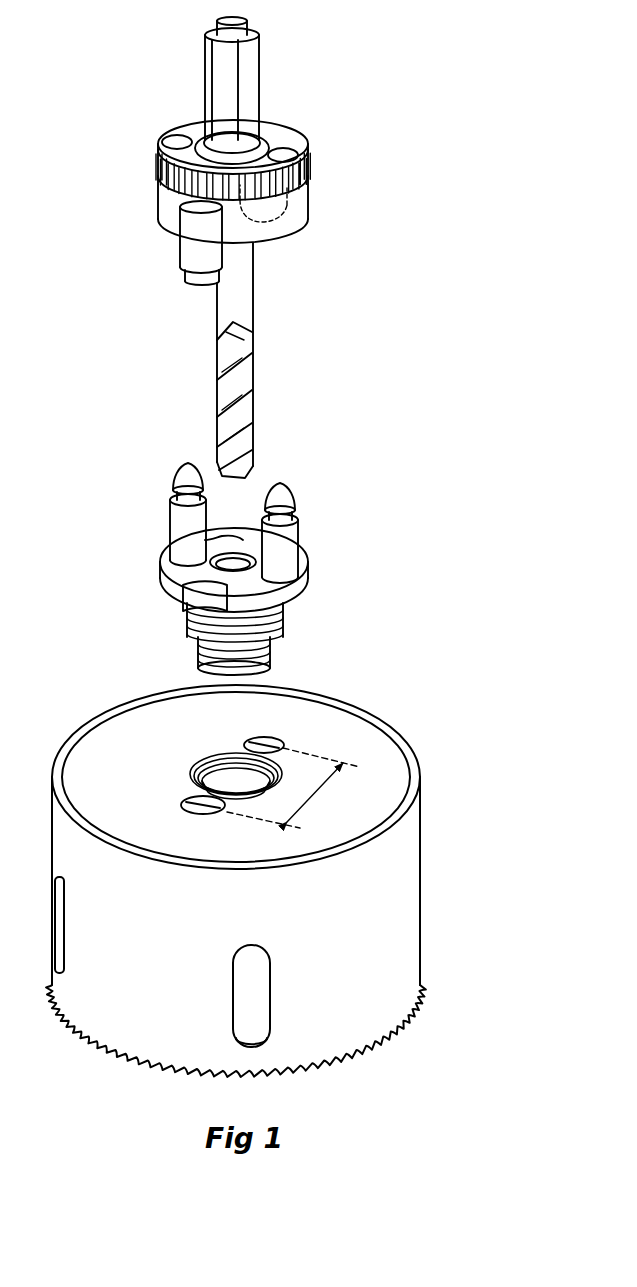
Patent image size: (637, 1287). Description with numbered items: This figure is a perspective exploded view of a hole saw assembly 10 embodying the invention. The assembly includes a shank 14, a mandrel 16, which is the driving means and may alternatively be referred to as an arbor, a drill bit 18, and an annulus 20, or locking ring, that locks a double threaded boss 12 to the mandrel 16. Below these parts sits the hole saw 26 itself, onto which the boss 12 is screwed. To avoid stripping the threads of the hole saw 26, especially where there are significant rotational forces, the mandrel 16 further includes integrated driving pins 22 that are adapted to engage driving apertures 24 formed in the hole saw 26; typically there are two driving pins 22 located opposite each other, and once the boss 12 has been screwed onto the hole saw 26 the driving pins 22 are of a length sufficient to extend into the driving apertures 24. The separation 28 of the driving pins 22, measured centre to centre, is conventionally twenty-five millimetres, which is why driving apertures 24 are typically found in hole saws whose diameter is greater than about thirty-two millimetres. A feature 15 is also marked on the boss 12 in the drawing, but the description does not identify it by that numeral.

The hole saw assembly 10 is at (358, 332).
The double threaded boss 12 is at (325, 553).
The shank 14 is at (247, 102).
The notch 15 is at (180, 597).
The mandrel 16 is at (293, 216).
The drill bit 18 is at (222, 357).
The annulus 20 is at (283, 135).
The driving pins 22 is at (190, 260).
The driving apertures 24 is at (197, 802).
The hole saw 26 is at (393, 893).
The separation 28 is at (313, 788).